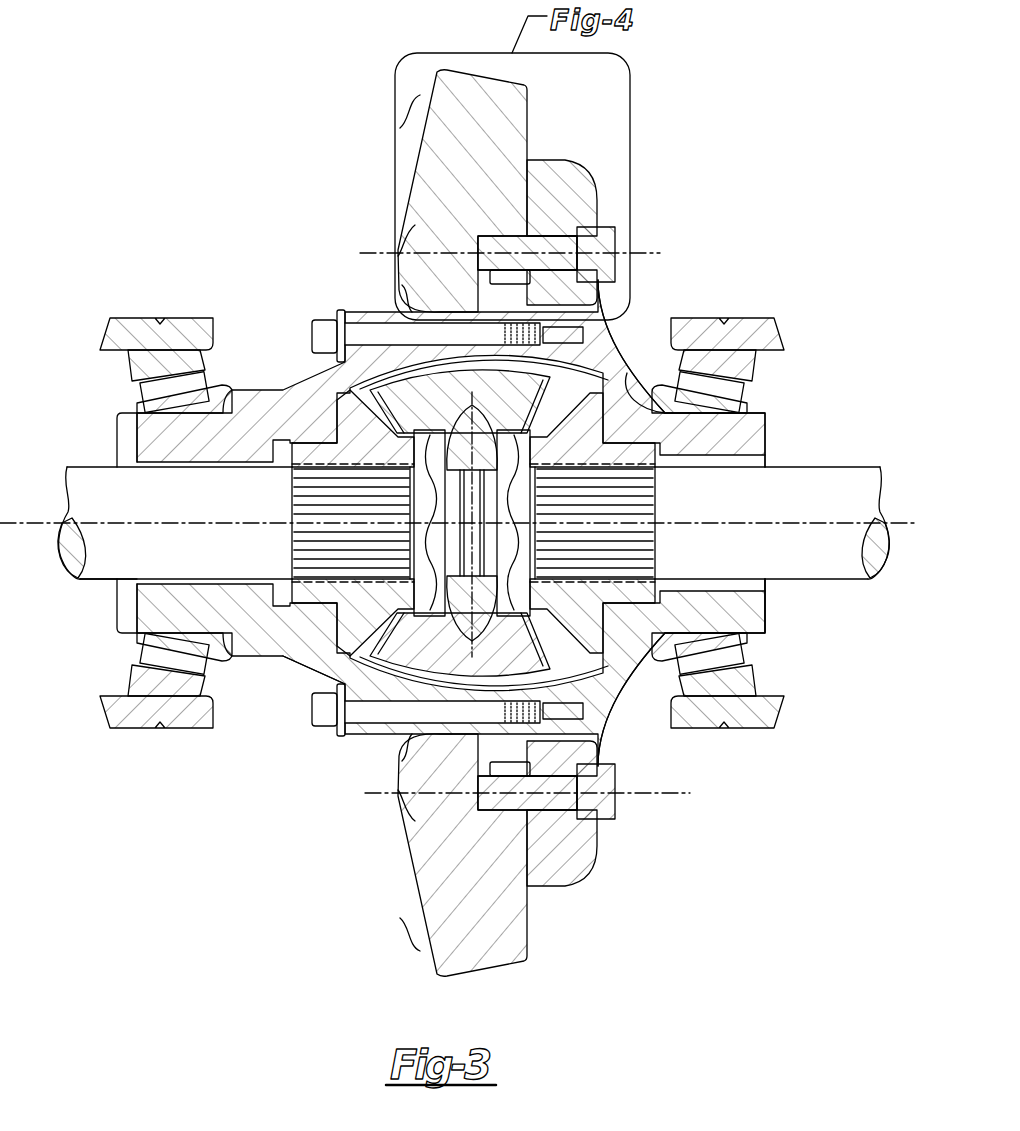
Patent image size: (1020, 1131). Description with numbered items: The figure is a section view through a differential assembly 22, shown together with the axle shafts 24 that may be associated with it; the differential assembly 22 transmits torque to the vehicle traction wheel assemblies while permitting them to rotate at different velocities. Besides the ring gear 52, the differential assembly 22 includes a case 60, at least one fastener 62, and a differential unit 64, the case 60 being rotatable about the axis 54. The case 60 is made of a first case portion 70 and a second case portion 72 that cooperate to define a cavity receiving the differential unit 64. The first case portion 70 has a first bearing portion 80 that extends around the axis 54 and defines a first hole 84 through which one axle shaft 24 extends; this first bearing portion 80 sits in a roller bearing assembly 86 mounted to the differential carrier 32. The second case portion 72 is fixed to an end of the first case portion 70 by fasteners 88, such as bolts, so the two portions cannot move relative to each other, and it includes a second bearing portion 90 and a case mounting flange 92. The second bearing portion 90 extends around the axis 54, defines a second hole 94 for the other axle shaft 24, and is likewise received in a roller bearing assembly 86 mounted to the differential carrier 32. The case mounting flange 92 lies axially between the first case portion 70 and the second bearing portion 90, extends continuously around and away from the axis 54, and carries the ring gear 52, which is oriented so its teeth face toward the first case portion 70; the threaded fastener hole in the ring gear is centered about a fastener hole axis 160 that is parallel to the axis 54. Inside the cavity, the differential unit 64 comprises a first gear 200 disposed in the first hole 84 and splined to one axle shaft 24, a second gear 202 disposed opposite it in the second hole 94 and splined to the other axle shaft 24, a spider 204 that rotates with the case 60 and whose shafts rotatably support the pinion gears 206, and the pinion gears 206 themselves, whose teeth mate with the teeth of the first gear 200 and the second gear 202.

The differential assembly 22 is at (334, 244).
The axle shaft 24 is at (130, 509).
The differential carrier 32 is at (110, 324).
The ring gear 52 is at (487, 172).
The axis 54 is at (22, 523).
The case 60 is at (114, 447).
The fastener 62 is at (620, 238).
The differential unit 64 is at (346, 405).
The first case portion 70 is at (266, 390).
The second case portion 72 is at (615, 343).
The first bearing portion 80 is at (118, 428).
The first hole 84 is at (134, 580).
The roller bearing assembly 86 is at (130, 365).
The fastener 88 is at (318, 318).
The second bearing portion 90 is at (766, 428).
The case mounting flange 92 is at (553, 162).
The second hole 94 is at (768, 588).
The fastener hole axis 160 is at (617, 253).
The first gear 200 is at (302, 600).
The second gear 202 is at (603, 665).
The spider 204 is at (478, 645).
The pinion gear 206 is at (398, 385).